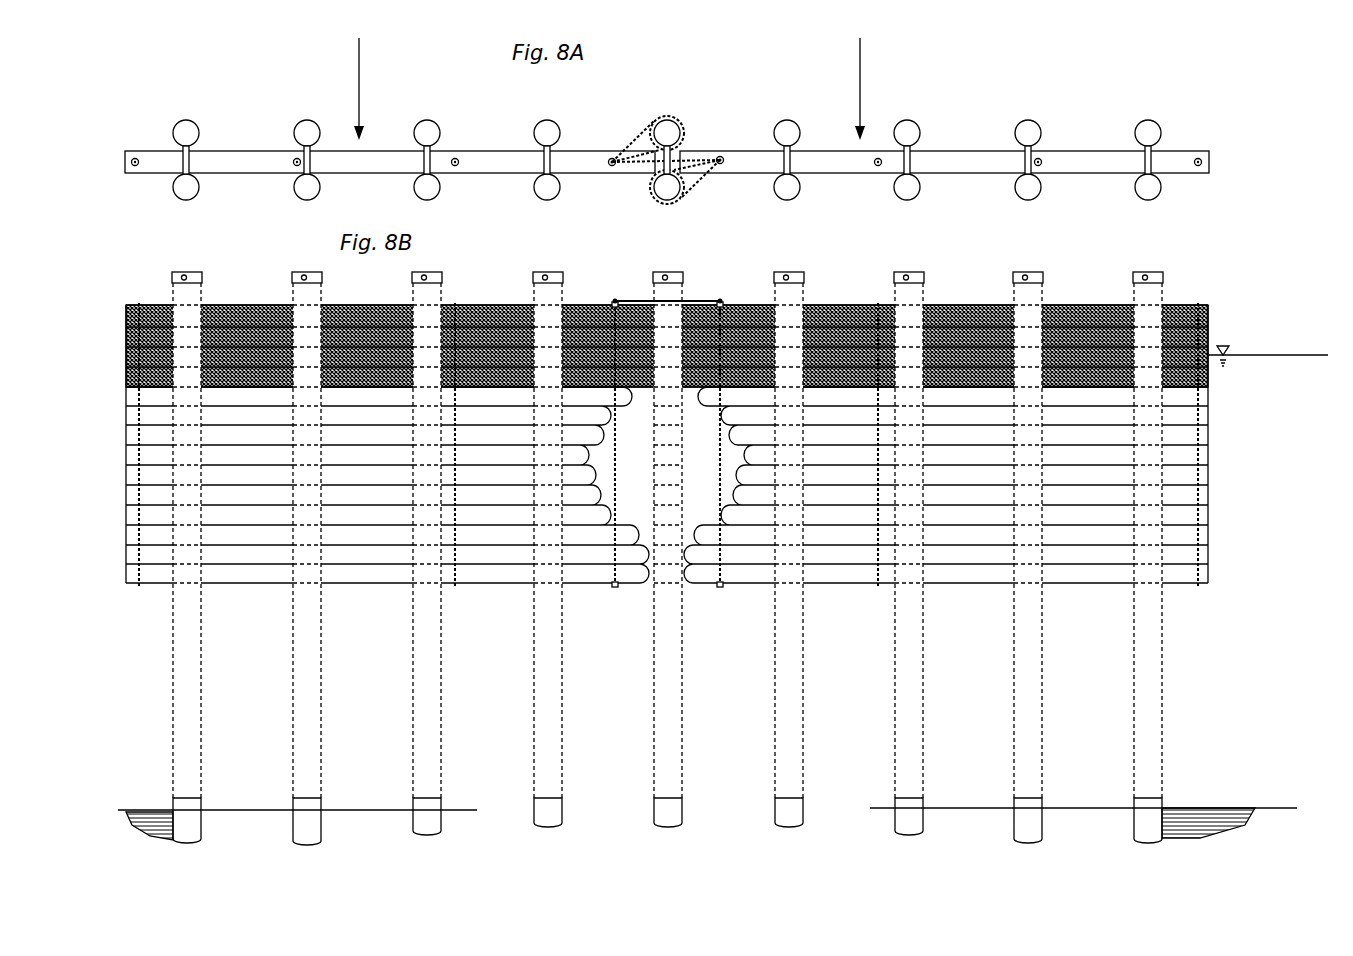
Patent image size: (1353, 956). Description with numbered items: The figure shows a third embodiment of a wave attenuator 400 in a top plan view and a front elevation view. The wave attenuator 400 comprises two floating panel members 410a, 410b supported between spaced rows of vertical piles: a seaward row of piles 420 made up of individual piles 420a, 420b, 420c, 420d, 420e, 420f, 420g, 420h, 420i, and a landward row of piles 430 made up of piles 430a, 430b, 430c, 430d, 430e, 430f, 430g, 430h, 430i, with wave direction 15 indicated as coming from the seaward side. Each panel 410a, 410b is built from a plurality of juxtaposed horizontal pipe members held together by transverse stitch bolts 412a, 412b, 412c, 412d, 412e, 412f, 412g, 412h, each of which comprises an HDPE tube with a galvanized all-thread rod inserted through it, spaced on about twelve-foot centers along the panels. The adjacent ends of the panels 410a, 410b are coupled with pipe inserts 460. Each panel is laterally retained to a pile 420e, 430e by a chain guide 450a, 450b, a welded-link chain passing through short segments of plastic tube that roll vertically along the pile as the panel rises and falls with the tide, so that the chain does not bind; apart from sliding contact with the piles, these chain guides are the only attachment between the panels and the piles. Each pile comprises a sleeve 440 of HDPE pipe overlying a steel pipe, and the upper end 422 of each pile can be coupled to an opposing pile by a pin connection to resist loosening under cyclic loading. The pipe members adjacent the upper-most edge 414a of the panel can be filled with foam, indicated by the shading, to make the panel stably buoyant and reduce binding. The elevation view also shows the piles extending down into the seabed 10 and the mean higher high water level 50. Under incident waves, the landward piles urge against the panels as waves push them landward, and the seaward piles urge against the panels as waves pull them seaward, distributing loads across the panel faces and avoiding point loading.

In FIG. 8A, the wave attenuator 400 is at (707, 127).
In FIG. 8A, the floating panel member 410a is at (492, 151).
In FIG. 8B, the floating panel member 410a is at (120, 476).
In FIG. 8A, the floating panel member 410b is at (812, 150).
In FIG. 8B, the floating panel member 410b is at (1224, 470).
In FIG. 8A, the stitch bolt 412a is at (136, 158).
In FIG. 8A, the stitch bolt 412b is at (294, 160).
In FIG. 8A, the stitch bolt 412c is at (455, 158).
In FIG. 8A, the stitch bolt 412d is at (614, 170).
In FIG. 8B, the stitch bolt 412d is at (616, 482).
In FIG. 8A, the stitch bolt 412e is at (722, 157).
In FIG. 8B, the stitch bolt 412e is at (719, 512).
In FIG. 8A, the stitch bolt 412f is at (879, 166).
In FIG. 8A, the stitch bolt 412g is at (1041, 162).
In FIG. 8A, the stitch bolt 412h is at (1198, 158).
In FIG. 8B, the upper-most edge of the panel 414a is at (498, 303).
In FIG. 8A, the seaward piles 420 is at (616, 103).
In FIG. 8A, the seaward pile 420a is at (190, 121).
In FIG. 8A, the seaward pile 420b is at (303, 121).
In FIG. 8A, the seaward pile 420c is at (420, 121).
In FIG. 8A, the seaward pile 420d is at (557, 126).
In FIG. 8A, the seaward pile 420e is at (660, 121).
In FIG. 8A, the seaward pile 420f is at (782, 120).
In FIG. 8A, the seaward pile 420g is at (918, 121).
In FIG. 8A, the seaward pile 420h is at (1036, 121).
In FIG. 8A, the seaward pile 420i is at (1143, 120).
In FIG. 8B, the upper end of pile 422 is at (190, 276).
In FIG. 8A, the landward piles 430 is at (651, 208).
In FIG. 8A, the landward pile 430a is at (185, 200).
In FIG. 8A, the landward pile 430b is at (298, 198).
In FIG. 8A, the landward pile 430c is at (416, 194).
In FIG. 8A, the landward pile 430d is at (541, 198).
In FIG. 8A, the landward pile 430e is at (667, 202).
In FIG. 8A, the landward pile 430f is at (794, 200).
In FIG. 8A, the landward pile 430g is at (919, 195).
In FIG. 8A, the landward pile 430h is at (1040, 198).
In FIG. 8A, the landward pile 430i is at (1160, 197).
In FIG. 8B, the pile sleeve 440 is at (690, 549).
In FIG. 8A, the chain guide 450a is at (640, 126).
In FIG. 8A, the chain guide 450b is at (694, 188).
In FIG. 8A, the pipe insert 460 is at (692, 148).
In FIG. 8B, the pipe insert 460 is at (668, 301).
In FIG. 8A, the wave direction 15 is at (358, 55).
In FIG. 8B, the seabed 10 is at (247, 812).
In FIG. 8B, the mean higher high water level 50 is at (1288, 360).